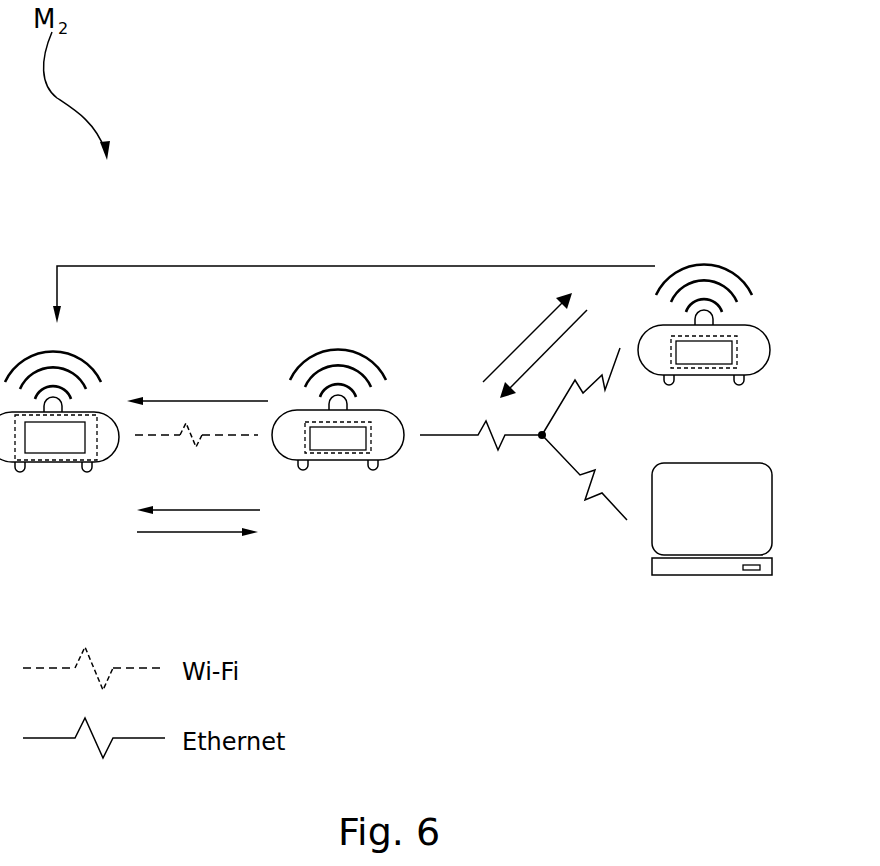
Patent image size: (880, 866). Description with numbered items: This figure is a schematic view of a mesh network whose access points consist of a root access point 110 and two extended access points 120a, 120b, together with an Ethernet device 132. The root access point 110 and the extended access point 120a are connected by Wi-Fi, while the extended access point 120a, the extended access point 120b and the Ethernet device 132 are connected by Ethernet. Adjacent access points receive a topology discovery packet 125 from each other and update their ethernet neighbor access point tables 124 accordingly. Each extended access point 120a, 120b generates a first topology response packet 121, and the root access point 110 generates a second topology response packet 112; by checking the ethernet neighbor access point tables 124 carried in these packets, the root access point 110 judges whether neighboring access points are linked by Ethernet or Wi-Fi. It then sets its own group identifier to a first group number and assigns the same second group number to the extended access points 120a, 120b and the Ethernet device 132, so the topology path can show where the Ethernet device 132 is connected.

The root access point 110 is at (90, 357).
The second topology response packet 112 is at (97, 440).
The extended access point 120a is at (378, 367).
The extended access point 120b is at (743, 277).
The first topology response packet 121 is at (290, 265).
The ethernet neighbor access point table 124 is at (381, 394).
The topology discovery packet 125 is at (205, 509).
The Ethernet device 132 is at (752, 463).